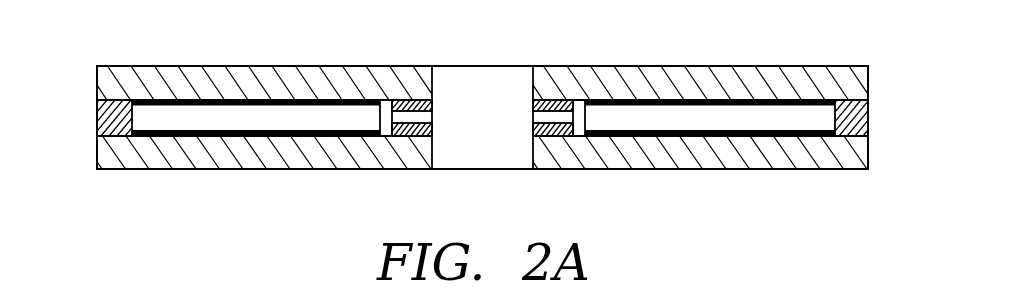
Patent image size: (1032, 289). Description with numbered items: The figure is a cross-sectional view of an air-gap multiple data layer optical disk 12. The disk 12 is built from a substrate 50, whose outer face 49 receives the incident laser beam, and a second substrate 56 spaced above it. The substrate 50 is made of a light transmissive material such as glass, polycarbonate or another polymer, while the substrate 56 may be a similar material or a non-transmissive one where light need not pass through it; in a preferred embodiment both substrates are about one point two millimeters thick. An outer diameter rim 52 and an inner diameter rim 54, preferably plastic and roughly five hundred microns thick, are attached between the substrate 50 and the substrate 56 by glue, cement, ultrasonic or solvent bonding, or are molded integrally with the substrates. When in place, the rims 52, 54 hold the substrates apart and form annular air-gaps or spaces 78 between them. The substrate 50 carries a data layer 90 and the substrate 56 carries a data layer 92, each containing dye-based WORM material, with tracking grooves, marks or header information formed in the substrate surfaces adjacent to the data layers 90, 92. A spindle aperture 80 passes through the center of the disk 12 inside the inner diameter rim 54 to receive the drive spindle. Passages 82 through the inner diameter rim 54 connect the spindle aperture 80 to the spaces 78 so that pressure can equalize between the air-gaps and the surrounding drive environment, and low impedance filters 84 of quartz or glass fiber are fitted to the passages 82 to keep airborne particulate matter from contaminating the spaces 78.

The disk 12 is at (200, 188).
The outer face 49 is at (790, 171).
The substrate 50 is at (97, 156).
The outer diameter (OD) rim 52 is at (97, 122).
The inner diameter (ID) rim 54 is at (430, 107).
The second substrate 56 is at (97, 90).
The annular air-gaps or spaces 78 is at (226, 116).
The spindle aperture 80 is at (508, 153).
The passages 82 is at (537, 118).
The low impedance filters 84 is at (382, 119).
The data layer 90 is at (820, 139).
The data layer 92 is at (852, 101).